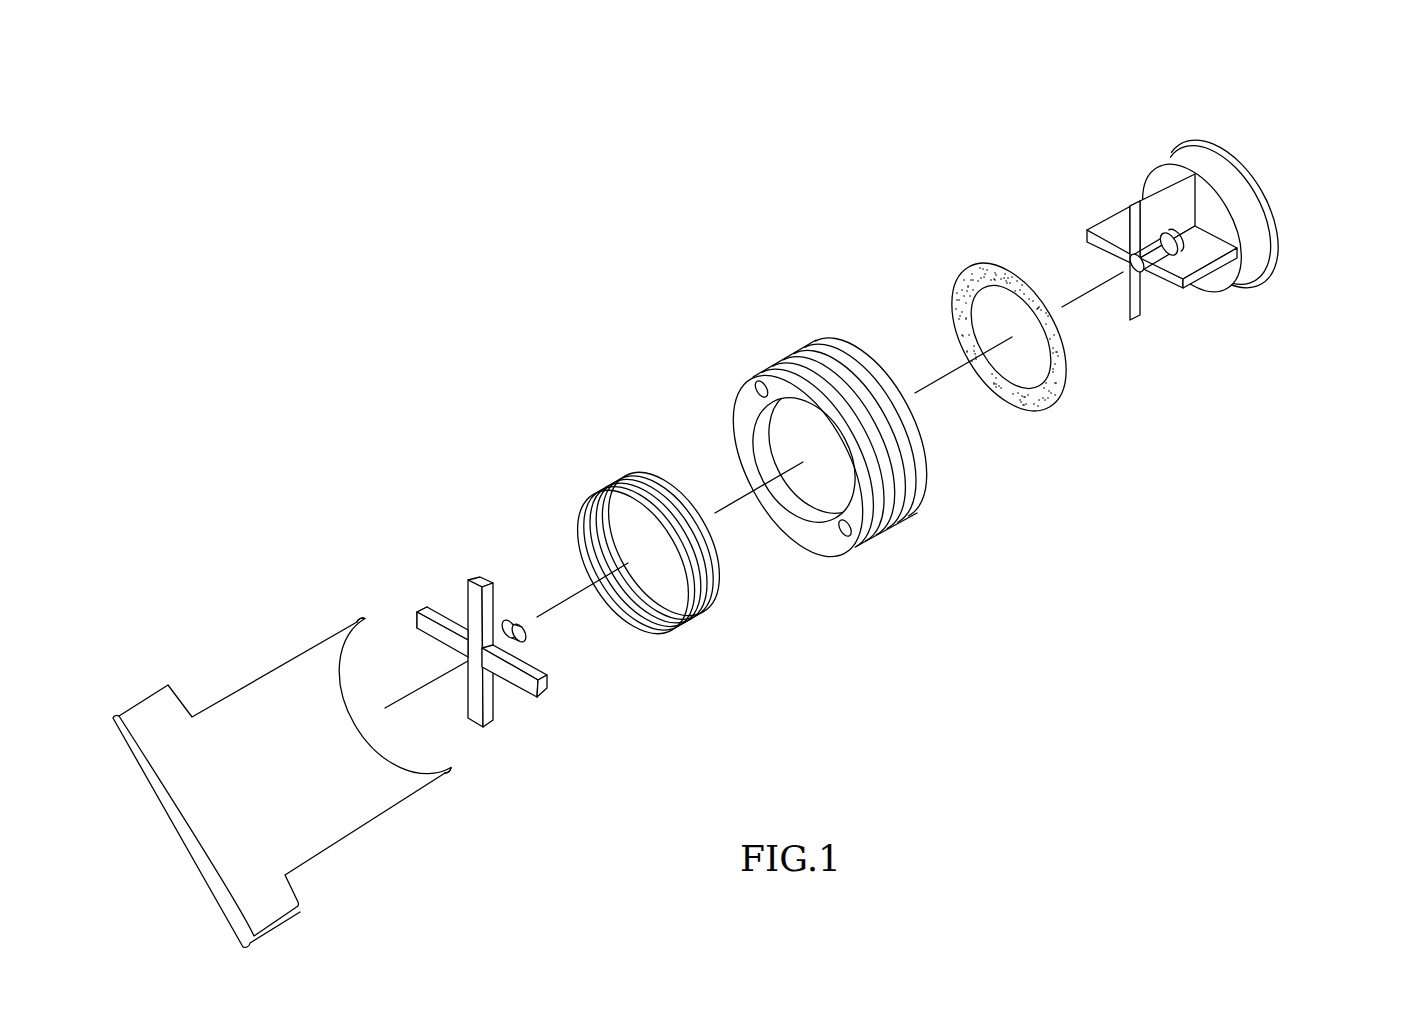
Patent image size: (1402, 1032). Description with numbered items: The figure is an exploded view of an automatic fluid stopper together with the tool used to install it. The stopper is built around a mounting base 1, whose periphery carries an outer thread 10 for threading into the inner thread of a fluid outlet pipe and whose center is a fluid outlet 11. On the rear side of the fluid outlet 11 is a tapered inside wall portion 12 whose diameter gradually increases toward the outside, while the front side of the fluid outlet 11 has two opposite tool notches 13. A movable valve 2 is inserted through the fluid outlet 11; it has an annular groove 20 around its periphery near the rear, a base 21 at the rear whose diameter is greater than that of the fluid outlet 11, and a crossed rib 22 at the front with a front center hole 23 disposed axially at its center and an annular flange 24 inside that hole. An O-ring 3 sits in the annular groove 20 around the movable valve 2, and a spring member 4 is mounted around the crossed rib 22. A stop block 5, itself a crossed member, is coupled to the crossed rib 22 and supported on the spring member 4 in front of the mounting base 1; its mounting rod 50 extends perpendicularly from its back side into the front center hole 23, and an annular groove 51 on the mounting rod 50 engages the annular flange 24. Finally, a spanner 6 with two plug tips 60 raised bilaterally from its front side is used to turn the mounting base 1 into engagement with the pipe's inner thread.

The mounting base 1 is at (806, 420).
The outer thread 10 is at (847, 363).
The fluid outlet 11 is at (805, 502).
The tapered inside wall portion 12 is at (790, 443).
The tool notches 13 is at (847, 533).
The movable valve 2 is at (1211, 220).
The annular groove 20 is at (1247, 217).
The base 21 is at (1208, 142).
The crossed rib 22 is at (1104, 222).
The front center hole 23 is at (1139, 268).
The annular flange 24 is at (1167, 253).
The O-ring 3 is at (988, 272).
The spring member 4 is at (657, 477).
The stop block 5 is at (476, 579).
The mounting rod 50 is at (508, 621).
The annular groove 51 is at (523, 637).
The spanner 6 is at (247, 697).
The plug tips 60 is at (525, 830).